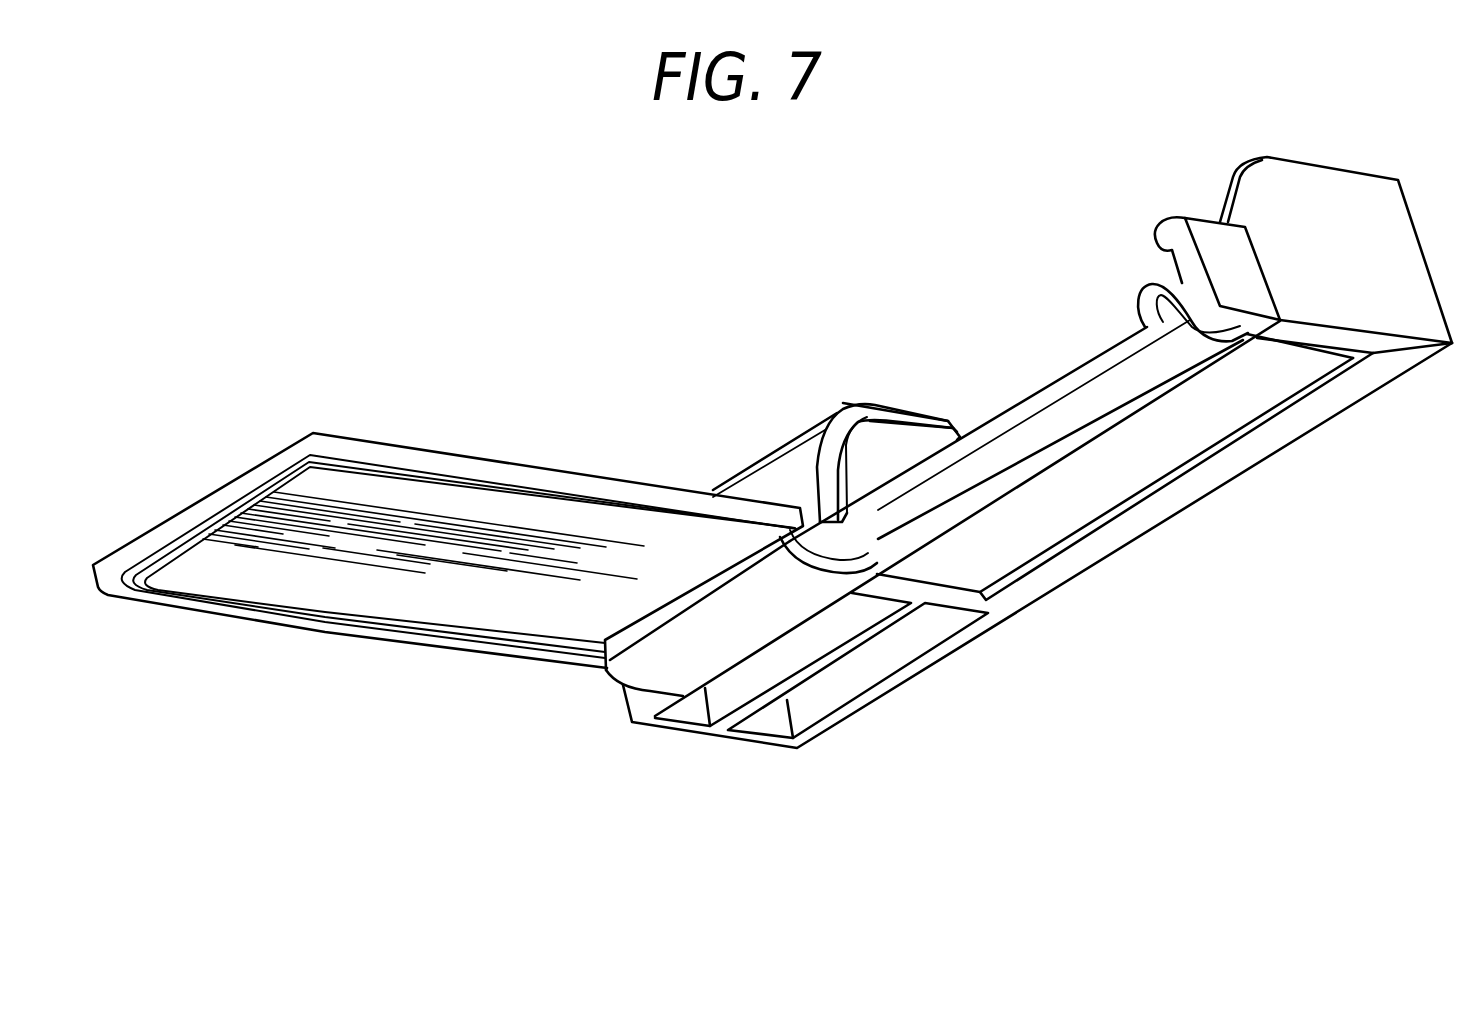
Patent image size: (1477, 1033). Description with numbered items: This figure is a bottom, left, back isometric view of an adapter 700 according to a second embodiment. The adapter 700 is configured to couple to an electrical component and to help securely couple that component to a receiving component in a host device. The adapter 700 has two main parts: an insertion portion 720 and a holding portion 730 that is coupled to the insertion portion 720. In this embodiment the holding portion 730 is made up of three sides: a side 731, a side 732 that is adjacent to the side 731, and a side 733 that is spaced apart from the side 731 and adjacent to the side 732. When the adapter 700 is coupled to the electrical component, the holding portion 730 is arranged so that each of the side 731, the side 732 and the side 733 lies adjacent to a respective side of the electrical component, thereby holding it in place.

The adapter 700 is at (348, 157).
The insertion portion 720 is at (415, 643).
The holding portion 730 is at (1029, 409).
The side 731 is at (880, 442).
The side 732 is at (1100, 560).
The side 733 is at (1280, 207).